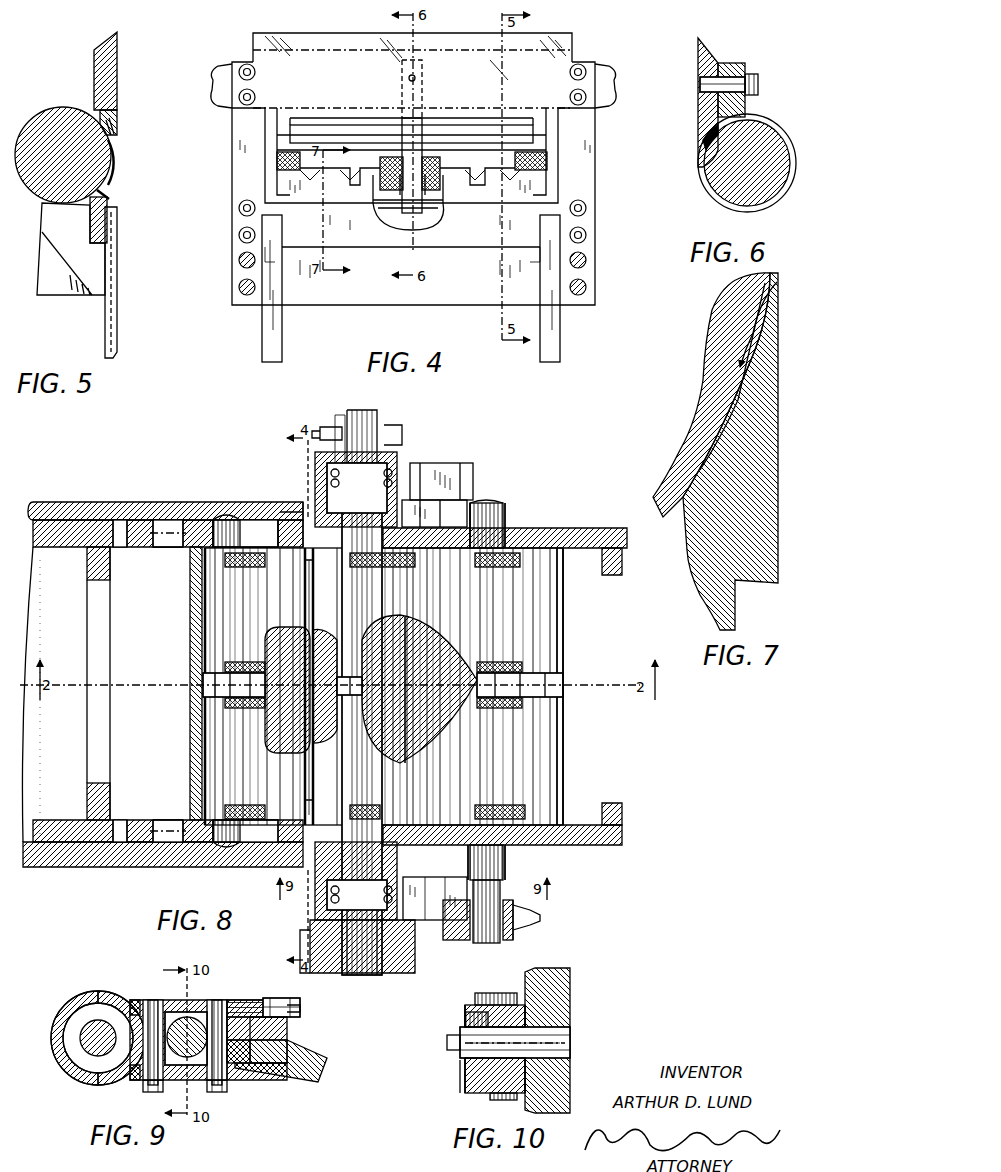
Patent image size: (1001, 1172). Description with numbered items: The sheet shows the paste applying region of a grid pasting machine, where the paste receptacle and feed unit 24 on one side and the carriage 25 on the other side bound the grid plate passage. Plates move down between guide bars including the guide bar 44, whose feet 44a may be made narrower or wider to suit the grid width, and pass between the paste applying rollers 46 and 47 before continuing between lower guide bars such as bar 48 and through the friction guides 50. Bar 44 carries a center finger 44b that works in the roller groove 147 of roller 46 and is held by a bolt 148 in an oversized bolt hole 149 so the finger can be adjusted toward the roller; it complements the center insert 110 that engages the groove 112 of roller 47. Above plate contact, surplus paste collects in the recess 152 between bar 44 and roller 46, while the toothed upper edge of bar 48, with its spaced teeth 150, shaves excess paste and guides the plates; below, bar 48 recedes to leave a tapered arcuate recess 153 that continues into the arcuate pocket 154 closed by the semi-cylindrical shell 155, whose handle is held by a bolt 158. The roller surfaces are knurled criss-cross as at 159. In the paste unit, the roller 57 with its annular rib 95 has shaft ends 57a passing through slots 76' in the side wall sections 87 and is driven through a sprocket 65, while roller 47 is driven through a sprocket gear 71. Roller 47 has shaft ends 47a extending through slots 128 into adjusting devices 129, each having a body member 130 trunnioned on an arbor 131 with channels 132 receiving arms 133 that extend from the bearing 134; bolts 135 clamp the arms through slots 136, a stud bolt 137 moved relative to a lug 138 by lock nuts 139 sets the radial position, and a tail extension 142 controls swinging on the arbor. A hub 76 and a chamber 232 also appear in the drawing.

In FIG. 8, the paste receptacle and feed unit 24 is at (590, 526).
In FIG. 10, the paste receptacle and feed unit 24 is at (574, 1000).
In FIG. 4, the carriage 25 is at (597, 260).
In FIG. 8, the carriage 25 is at (118, 500).
In FIG. 5, the guide bar 44 is at (115, 72).
In FIG. 4, the guide bar 44 is at (558, 52).
In FIG. 6, the guide bar 44 is at (718, 55).
In FIG. 5, the feet of guide bar 44a is at (112, 130).
In FIG. 4, the feet of guide bar 44a is at (540, 153).
In FIG. 4, the center finger 44b is at (417, 143).
In FIG. 6, the center finger 44b is at (705, 140).
In FIG. 8, the center finger 44b is at (253, 663).
In FIG. 5, the paste applying roller 46 is at (100, 148).
In FIG. 4, the paste applying roller 46 is at (533, 143).
In FIG. 6, the paste applying roller 46 is at (718, 197).
In FIG. 7, the paste applying roller 46 is at (703, 397).
In FIG. 8, the paste applying roller 46 is at (220, 760).
In FIG. 8, the paste applying roller 47 is at (383, 568).
In FIG. 8, the shaft ends of roller 47 47a is at (356, 410).
In FIG. 9, the shaft ends of roller 47 47a is at (86, 1052).
In FIG. 5, the guide bar 48 is at (108, 200).
In FIG. 4, the guide bar 48 is at (367, 230).
In FIG. 7, the guide bar 48 is at (700, 573).
In FIG. 5, the friction guides 50 is at (114, 305).
In FIG. 8, the roller 57 is at (543, 750).
In FIG. 8, the shaft ends of roller 57 57a is at (503, 525).
In FIG. 8, the sprocket 65 is at (540, 917).
In FIG. 8, the sprocket gear 71 is at (400, 437).
In FIG. 8, the hub 76 is at (359, 959).
In FIG. 8, the slots 76' is at (531, 691).
In FIG. 8, the side wall sections 87 is at (612, 575).
In FIG. 8, the annular rib 95 is at (563, 678).
In FIG. 8, the center insert 110 is at (273, 710).
In FIG. 8, the groove 112 is at (357, 697).
In FIG. 8, the slots 128 is at (327, 527).
In FIG. 8, the adjusting devices 129 is at (476, 470).
In FIG. 9, the adjusting devices 129 is at (273, 1068).
In FIG. 10, the adjusting devices 129 is at (460, 1070).
In FIG. 8, the body member 130 is at (435, 898).
In FIG. 9, the body member 130 is at (287, 1033).
In FIG. 10, the body member 130 is at (472, 1017).
In FIG. 9, the arbor 131 is at (192, 1010).
In FIG. 10, the arbor 131 is at (557, 1045).
In FIG. 10, the channels 132 is at (568, 1013).
In FIG. 9, the arms 133 is at (172, 1007).
In FIG. 10, the arms 133 is at (527, 1005).
In FIG. 8, the bearing 134 is at (317, 487).
In FIG. 9, the bearing 134 is at (55, 1048).
In FIG. 10, the bearing 134 is at (502, 995).
In FIG. 9, the bolts 135 is at (153, 1092).
In FIG. 10, the bolts 135 is at (500, 1093).
In FIG. 9, the slots 136 is at (140, 1003).
In FIG. 9, the stud bolt 137 is at (257, 1000).
In FIG. 9, the lug 138 is at (297, 1013).
In FIG. 9, the lock nuts 139 is at (290, 1000).
In FIG. 9, the tail extension 142 is at (325, 1070).
In FIG. 4, the roller groove 147 is at (423, 210).
In FIG. 6, the roller groove 147 is at (768, 122).
In FIG. 8, the roller groove 147 is at (205, 700).
In FIG. 6, the bolt 148 is at (758, 80).
In FIG. 6, the bolt hole 149 is at (745, 75).
In FIG. 5, the teeth 150 is at (112, 163).
In FIG. 4, the teeth 150 is at (318, 172).
In FIG. 7, the teeth 150 is at (772, 278).
In FIG. 5, the recess 152 is at (113, 112).
In FIG. 5, the tapered arcuate recess 153 is at (107, 203).
In FIG. 7, the tapered arcuate recess 153 is at (700, 472).
In FIG. 8, the arcuate pocket 154 is at (190, 582).
In FIG. 8, the semi-cylindrical shell 155 is at (192, 603).
In FIG. 4, the bolt 158 is at (440, 167).
In FIG. 8, the knurling 159 is at (233, 557).
In FIG. 8, the housing chamber 232 is at (87, 757).